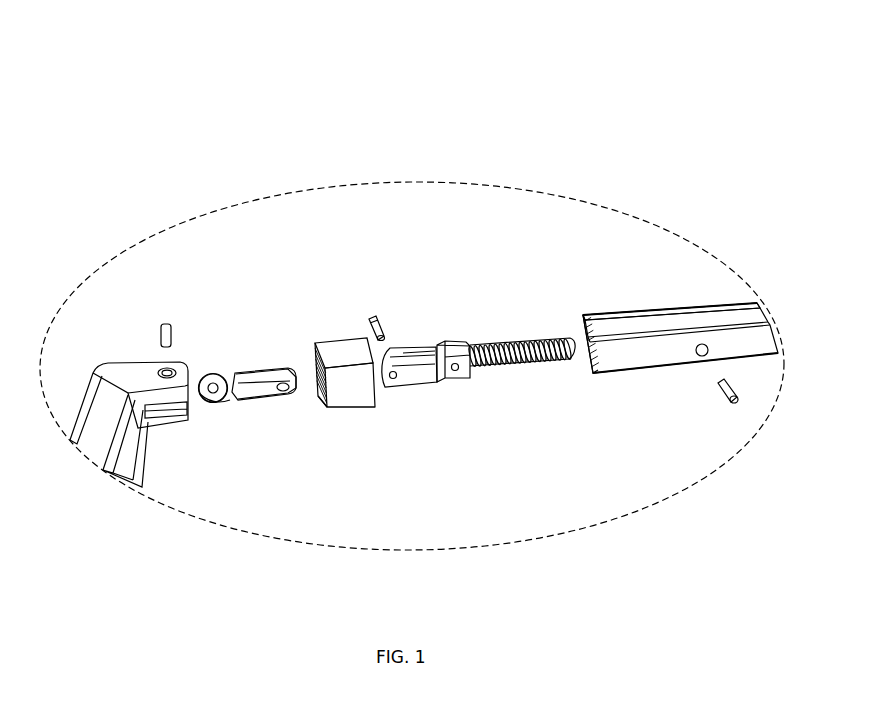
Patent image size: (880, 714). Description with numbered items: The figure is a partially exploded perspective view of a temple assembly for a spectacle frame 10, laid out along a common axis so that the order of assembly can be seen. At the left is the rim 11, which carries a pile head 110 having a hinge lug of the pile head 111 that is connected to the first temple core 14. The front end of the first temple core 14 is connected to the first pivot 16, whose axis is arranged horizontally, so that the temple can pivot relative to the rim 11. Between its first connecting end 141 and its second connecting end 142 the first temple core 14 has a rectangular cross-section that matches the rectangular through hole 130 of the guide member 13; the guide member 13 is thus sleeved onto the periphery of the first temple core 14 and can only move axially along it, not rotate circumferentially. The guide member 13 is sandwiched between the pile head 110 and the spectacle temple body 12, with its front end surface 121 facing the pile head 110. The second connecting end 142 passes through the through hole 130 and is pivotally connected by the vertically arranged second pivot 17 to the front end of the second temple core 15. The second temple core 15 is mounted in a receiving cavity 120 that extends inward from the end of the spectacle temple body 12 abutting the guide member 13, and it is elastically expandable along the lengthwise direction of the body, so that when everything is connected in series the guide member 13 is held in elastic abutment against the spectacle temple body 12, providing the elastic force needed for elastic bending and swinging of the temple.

The spectacle frame 10 is at (210, 76).
The rim 11 is at (100, 408).
The pile head 110 is at (143, 373).
The hinge lug of the pile head 111 is at (160, 426).
The first pivot 16 is at (164, 325).
The first temple core 14 is at (254, 374).
The first connecting end 141 is at (211, 402).
The second connecting end 142 is at (280, 395).
The guide member 13 is at (333, 343).
The through hole 130 is at (322, 404).
The second pivot 17 is at (375, 328).
The second temple core 15 is at (471, 426).
The spectacle temple body 12 is at (656, 326).
The front end surface 121 is at (583, 318).
The receiving cavity 120 is at (586, 370).